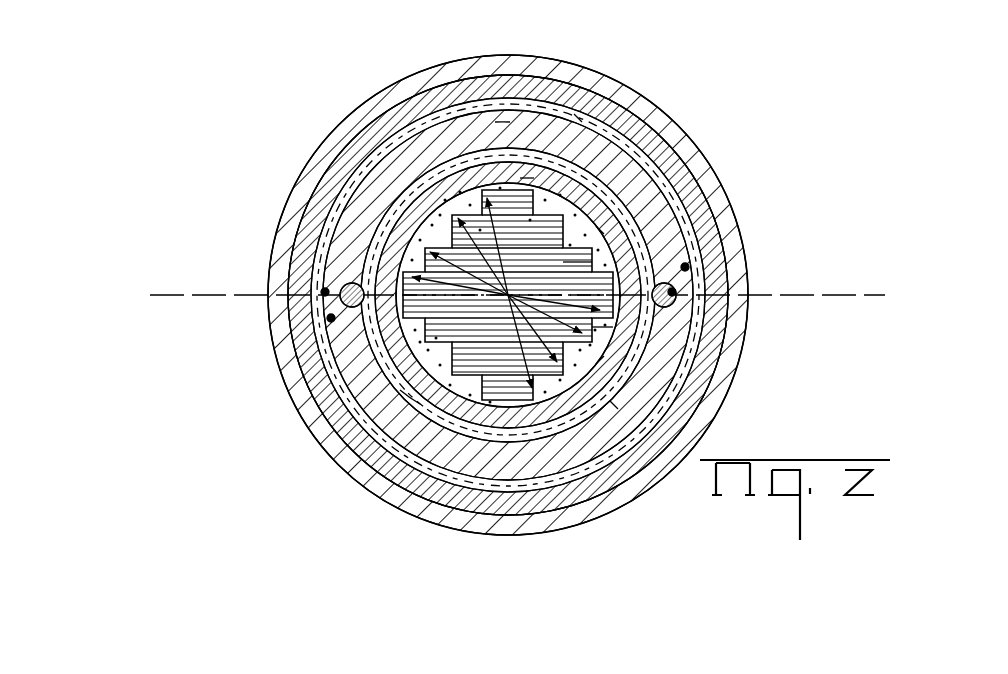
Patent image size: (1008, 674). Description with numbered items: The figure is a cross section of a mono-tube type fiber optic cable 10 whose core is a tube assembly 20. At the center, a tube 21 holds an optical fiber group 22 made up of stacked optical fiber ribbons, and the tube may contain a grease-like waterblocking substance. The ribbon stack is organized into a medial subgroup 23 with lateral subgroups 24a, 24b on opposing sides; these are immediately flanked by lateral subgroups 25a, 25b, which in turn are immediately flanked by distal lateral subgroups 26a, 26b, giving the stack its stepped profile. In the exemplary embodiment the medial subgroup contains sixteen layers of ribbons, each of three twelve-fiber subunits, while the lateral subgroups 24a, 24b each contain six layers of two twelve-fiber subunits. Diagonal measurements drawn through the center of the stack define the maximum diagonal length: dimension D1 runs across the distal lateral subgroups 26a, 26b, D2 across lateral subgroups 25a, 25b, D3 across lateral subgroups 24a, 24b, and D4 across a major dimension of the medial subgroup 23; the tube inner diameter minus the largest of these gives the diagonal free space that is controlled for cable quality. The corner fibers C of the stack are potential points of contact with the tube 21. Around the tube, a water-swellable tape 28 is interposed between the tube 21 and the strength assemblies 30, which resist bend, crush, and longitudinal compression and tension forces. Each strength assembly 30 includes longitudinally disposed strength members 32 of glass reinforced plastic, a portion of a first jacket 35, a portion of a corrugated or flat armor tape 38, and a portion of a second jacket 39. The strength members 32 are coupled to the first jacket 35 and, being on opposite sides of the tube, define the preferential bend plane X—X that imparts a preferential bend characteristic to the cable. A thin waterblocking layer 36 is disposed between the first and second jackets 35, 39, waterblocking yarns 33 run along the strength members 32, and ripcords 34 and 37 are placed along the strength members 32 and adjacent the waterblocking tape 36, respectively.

The fiber optic cable 10 is at (648, 76).
The tube assembly 20 is at (560, 180).
The tube 21 is at (470, 165).
The optical fiber group 22 is at (527, 178).
The medial subgroup 23 is at (628, 282).
The lateral subgroup 24a is at (576, 262).
The lateral subgroup 24b is at (602, 327).
The lateral subgroup 25a is at (600, 230).
The lateral subgroup 25b is at (600, 360).
The lateral subgroup 26a is at (578, 118).
The lateral subgroup 26b is at (614, 405).
The water-swellable tape 28 is at (502, 124).
The strength assembly 30 is at (340, 292).
The strength member 32 is at (400, 358).
The waterblocking yarn 33 is at (398, 395).
The ripcord 34 is at (322, 296).
The first jacket 35 is at (405, 150).
The waterblocking layer 36 is at (352, 214).
The ripcord 37 is at (328, 318).
The armor tape 38 is at (322, 158).
The second jacket 39 is at (312, 172).
The diagonal measurement D1 is at (458, 218).
The diagonal measurement D2 is at (508, 298).
The diagonal measurement D3 is at (508, 298).
The diagonal measurement D4 is at (430, 252).
The corner fibers C is at (372, 425).
The preferential bend plane X is at (516, 296).